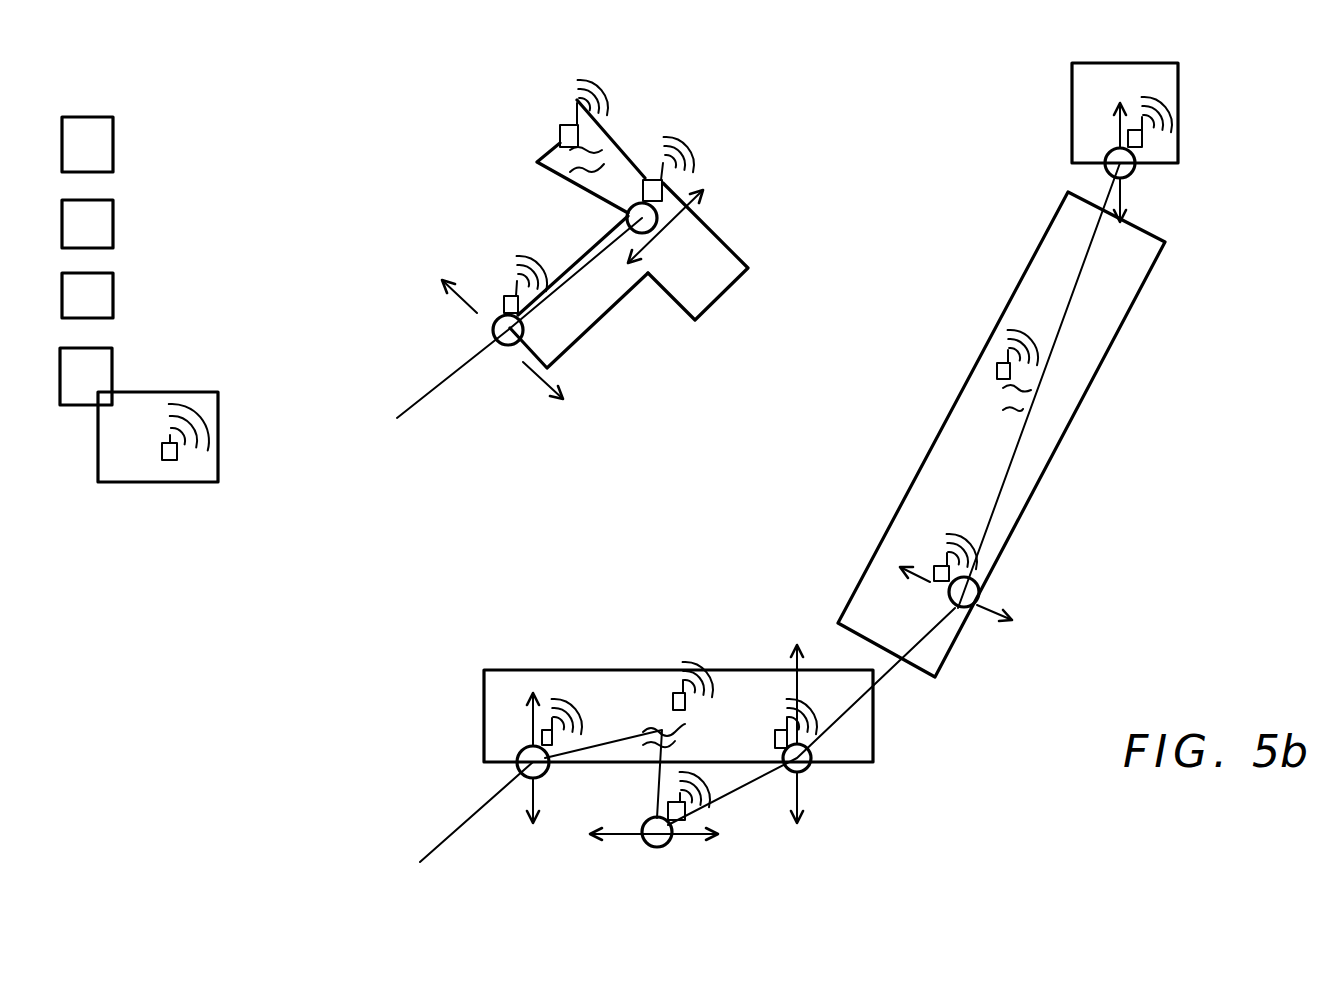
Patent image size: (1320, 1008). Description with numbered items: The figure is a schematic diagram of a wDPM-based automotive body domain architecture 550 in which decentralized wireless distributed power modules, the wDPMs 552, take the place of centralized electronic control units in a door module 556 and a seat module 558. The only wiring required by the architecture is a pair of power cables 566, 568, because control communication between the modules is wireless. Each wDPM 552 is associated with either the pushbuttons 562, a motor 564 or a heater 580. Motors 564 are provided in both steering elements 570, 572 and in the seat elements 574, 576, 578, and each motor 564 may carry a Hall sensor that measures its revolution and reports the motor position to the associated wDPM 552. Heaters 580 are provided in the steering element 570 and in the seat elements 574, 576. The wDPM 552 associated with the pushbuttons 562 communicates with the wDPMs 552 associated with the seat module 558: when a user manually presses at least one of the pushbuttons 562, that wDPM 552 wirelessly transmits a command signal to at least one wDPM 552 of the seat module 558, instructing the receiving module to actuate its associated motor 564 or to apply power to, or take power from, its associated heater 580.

The automotive body domain architecture 550 is at (228, 770).
The wDPM 552 is at (147, 475).
The door module 556 is at (135, 643).
The seat module 558 is at (395, 612).
The pushbuttons 562 is at (99, 143).
The motor 564 is at (627, 222).
The power cable 566 is at (415, 407).
The power cable 568 is at (1075, 289).
The steering element 570 is at (728, 247).
The steering element 572 is at (587, 331).
The seat element 574 is at (873, 735).
The seat element 576 is at (1034, 492).
The seat element 578 is at (1178, 87).
The heater 580 is at (537, 160).